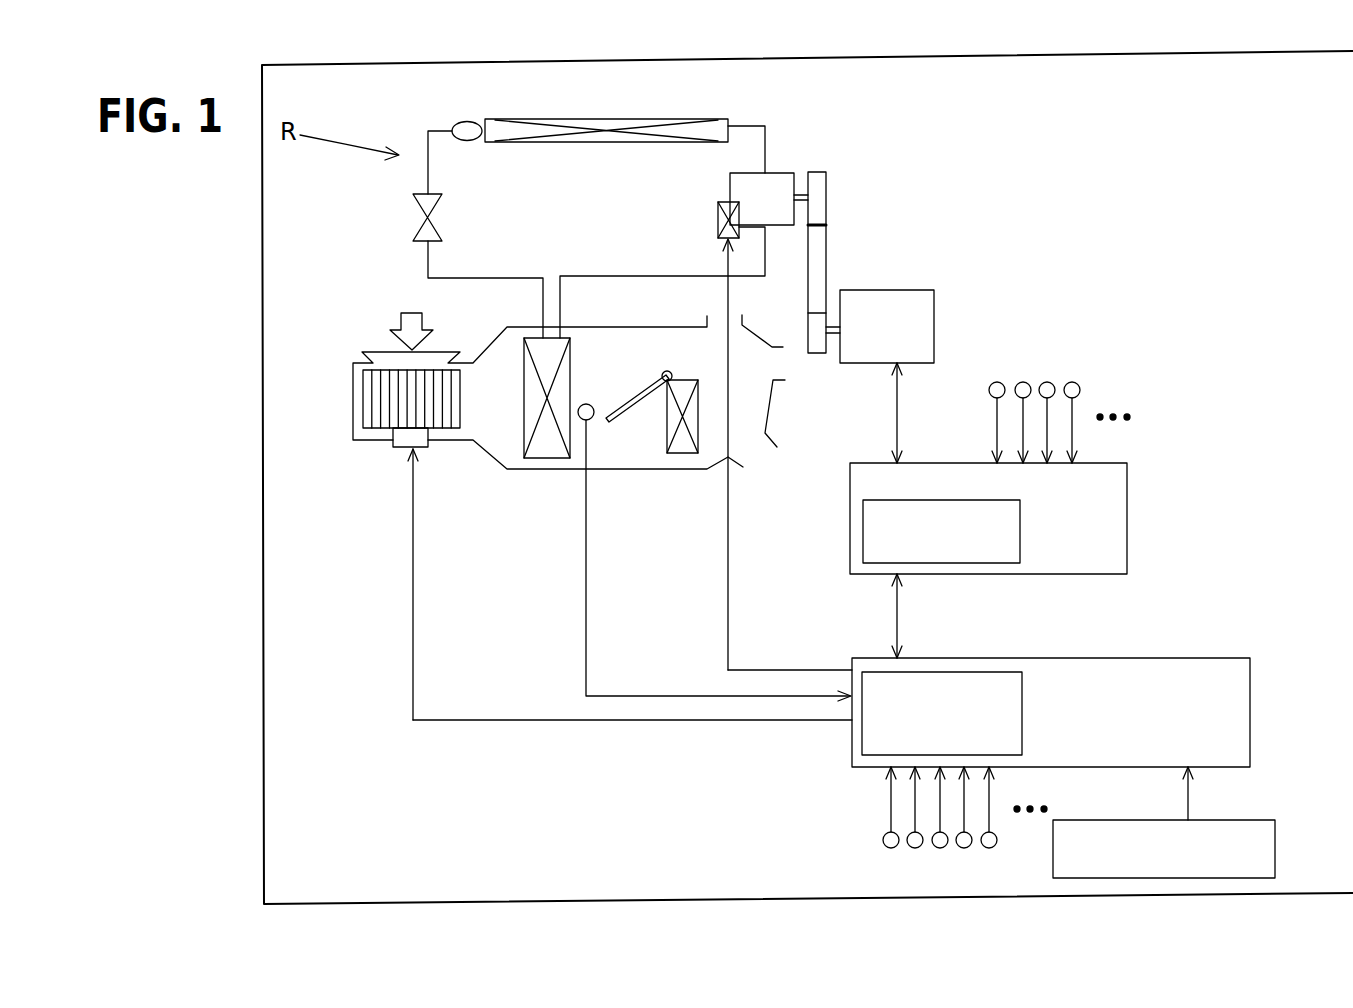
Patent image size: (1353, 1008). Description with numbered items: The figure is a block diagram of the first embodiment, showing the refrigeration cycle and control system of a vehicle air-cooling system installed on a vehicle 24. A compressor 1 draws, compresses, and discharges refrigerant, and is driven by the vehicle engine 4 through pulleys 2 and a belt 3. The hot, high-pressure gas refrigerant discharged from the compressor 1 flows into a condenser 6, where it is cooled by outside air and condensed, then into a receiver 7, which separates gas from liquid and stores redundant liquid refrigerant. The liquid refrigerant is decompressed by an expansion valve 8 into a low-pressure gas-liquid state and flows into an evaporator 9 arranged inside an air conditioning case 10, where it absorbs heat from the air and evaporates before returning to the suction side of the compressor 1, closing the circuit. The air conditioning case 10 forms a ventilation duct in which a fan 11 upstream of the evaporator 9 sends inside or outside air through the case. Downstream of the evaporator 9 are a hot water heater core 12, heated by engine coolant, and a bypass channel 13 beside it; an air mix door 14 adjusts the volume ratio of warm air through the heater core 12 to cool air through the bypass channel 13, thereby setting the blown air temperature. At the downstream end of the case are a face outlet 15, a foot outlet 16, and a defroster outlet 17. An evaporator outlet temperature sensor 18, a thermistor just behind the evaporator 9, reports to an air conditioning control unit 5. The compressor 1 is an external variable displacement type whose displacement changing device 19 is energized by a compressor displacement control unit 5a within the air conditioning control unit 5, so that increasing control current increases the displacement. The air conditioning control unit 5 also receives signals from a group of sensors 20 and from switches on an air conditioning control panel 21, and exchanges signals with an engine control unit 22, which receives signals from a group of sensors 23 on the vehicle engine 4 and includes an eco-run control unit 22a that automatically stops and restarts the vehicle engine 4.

The compressor 1 is at (772, 178).
The pulleys 2 is at (818, 177).
The belt 3 is at (817, 268).
The vehicle engine 4 is at (900, 297).
The air conditioning control unit 5 is at (1227, 648).
The compressor displacement control unit 5a is at (930, 672).
The condenser 6 is at (620, 119).
The receiver 7 is at (452, 125).
The expansion valve 8 is at (413, 231).
The evaporator 9 is at (572, 348).
The air conditioning case 10 is at (516, 327).
The fan 11 is at (383, 428).
The hot water heater core 12 is at (683, 455).
The bypass channel 13 is at (658, 347).
The air mix door 14 is at (637, 405).
The face outlet 15 is at (782, 369).
The foot outlet 16 is at (760, 458).
The defroster outlet 17 is at (735, 315).
The evaporator outlet temperature sensor 18 is at (590, 420).
The displacement changing device 19 is at (718, 222).
The group of sensors 20 is at (930, 862).
The air conditioning control panel 21 is at (1275, 830).
The engine control unit 22 is at (1137, 477).
The eco-run control unit 22a is at (863, 537).
The group of sensors 23 is at (1033, 370).
The vehicle 24 is at (262, 855).